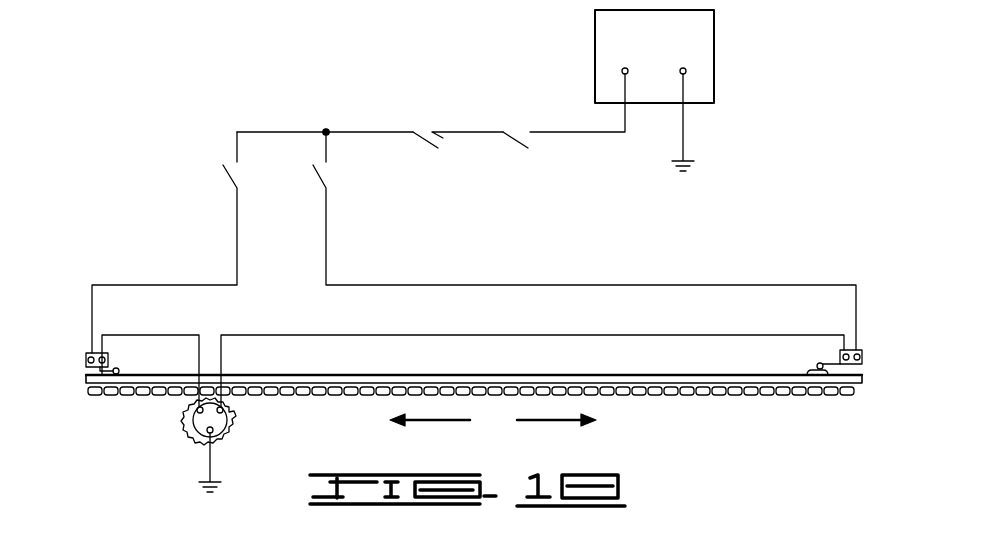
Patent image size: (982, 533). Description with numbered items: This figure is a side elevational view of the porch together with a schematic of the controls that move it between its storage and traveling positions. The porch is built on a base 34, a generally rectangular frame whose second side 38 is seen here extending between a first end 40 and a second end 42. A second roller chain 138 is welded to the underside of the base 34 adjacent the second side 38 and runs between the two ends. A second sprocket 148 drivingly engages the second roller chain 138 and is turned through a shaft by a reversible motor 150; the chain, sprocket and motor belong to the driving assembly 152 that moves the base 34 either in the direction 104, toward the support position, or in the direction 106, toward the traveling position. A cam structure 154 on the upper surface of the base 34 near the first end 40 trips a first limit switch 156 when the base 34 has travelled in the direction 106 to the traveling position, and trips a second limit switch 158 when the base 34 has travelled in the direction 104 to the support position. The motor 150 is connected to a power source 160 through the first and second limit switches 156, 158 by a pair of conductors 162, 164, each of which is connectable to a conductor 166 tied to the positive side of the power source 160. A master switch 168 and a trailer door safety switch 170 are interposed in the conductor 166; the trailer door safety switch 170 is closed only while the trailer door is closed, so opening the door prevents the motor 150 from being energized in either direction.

The power source 160 is at (715, 43).
The conductor 166 is at (370, 132).
The trailer door safety switch 170 is at (427, 141).
The master switch 168 is at (517, 144).
The conductor 164 is at (150, 335).
The conductor 162 is at (262, 335).
The second limit switch 158 is at (87, 355).
The first limit switch 156 is at (866, 353).
The cam structure 154 is at (812, 370).
The second end 42 is at (489, 376).
The first end 40 is at (498, 346).
The second side 38 is at (474, 343).
The base 34 is at (512, 378).
The second roller chain 138 is at (735, 396).
The second sprocket 148 is at (190, 447).
The reversible motor 150 is at (160, 447).
The driving assembly 152 is at (160, 447).
The direction 104 is at (437, 423).
The direction 106 is at (553, 423).